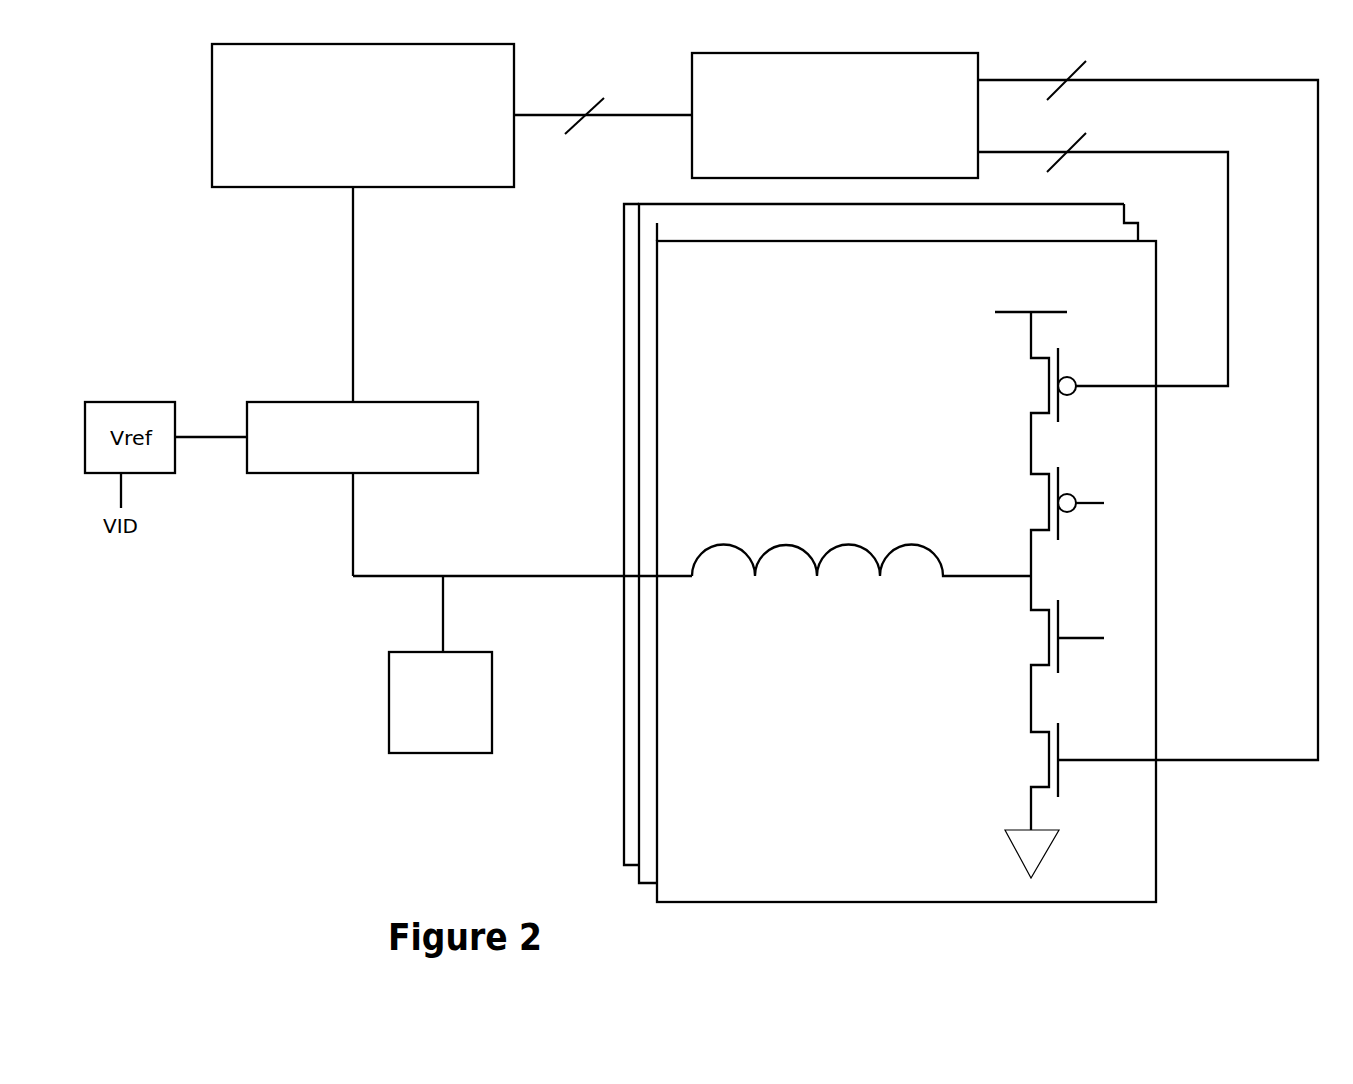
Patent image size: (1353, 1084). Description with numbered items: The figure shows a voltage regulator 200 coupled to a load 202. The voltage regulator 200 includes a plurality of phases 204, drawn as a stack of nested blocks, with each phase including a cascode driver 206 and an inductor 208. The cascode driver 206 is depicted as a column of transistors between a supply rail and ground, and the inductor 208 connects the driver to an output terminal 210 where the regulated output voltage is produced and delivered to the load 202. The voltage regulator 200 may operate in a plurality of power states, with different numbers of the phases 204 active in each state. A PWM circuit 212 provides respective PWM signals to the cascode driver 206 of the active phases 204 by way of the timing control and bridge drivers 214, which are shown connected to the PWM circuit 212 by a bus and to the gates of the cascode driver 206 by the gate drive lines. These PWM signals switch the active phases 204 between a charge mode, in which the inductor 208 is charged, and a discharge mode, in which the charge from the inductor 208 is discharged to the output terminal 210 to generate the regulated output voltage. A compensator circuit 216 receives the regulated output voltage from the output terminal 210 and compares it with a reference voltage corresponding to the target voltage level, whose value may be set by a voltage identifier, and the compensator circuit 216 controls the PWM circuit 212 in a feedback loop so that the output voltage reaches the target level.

The voltage regulator 200 is at (138, 105).
The load 202 is at (440, 664).
The phases 204 is at (890, 553).
The cascode driver 206 is at (975, 425).
The inductor 208 is at (833, 545).
The output terminal 210 is at (540, 575).
The PWM circuit 212 is at (363, 115).
The timing control and bridge drivers 214 is at (835, 115).
The compensator circuit 216 is at (362, 437).